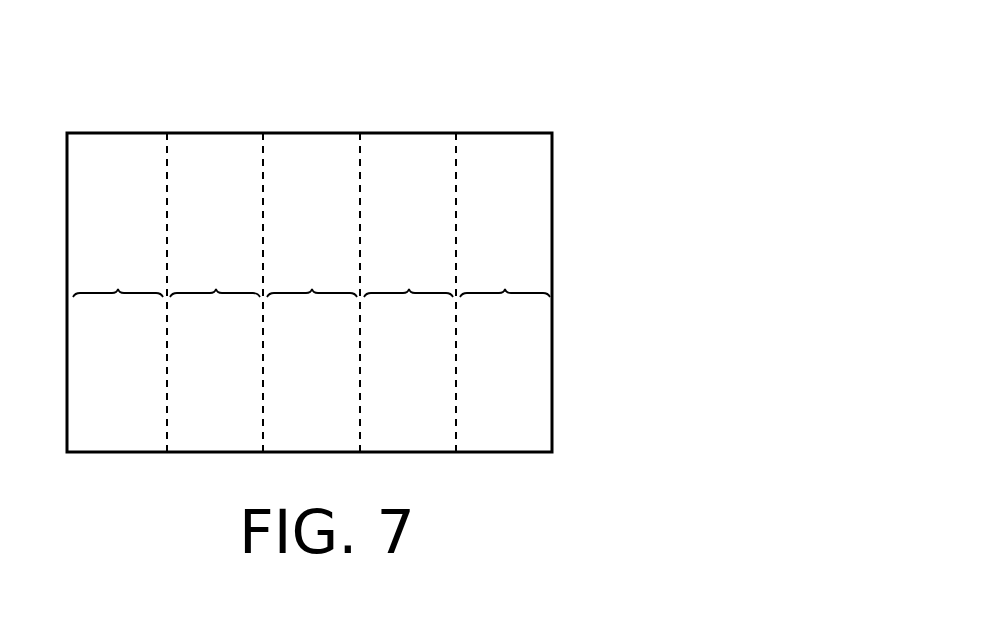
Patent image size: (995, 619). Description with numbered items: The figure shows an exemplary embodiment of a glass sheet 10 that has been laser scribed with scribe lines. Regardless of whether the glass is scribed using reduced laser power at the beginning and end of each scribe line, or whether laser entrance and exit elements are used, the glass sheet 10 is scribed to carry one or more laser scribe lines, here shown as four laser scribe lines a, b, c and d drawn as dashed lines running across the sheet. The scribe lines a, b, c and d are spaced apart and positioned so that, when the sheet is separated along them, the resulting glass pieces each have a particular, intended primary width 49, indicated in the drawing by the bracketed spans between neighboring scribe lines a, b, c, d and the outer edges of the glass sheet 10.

The glass sheet 10 is at (585, 97).
The primary width 49 is at (311, 273).
The laser scribe line a is at (168, 166).
The laser scribe line b is at (264, 166).
The laser scribe line c is at (361, 166).
The laser scribe line d is at (457, 166).